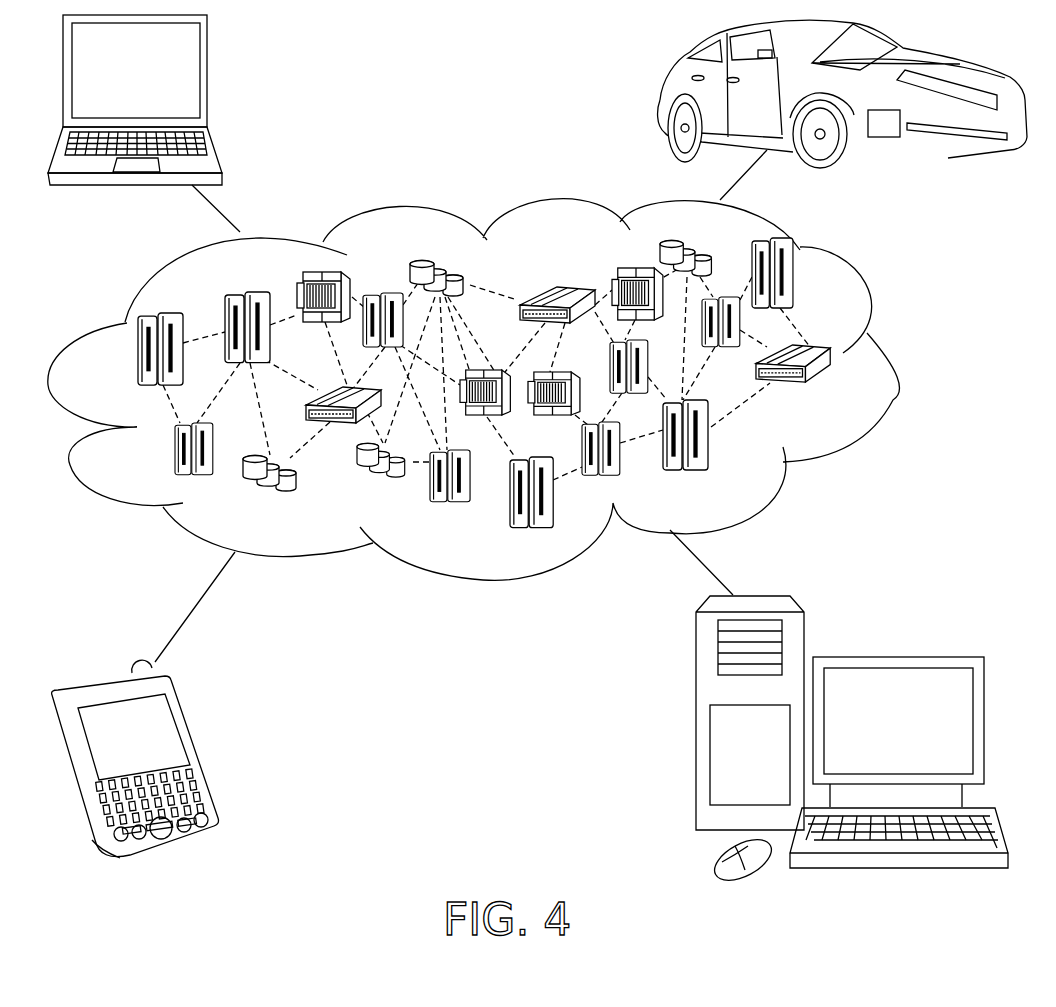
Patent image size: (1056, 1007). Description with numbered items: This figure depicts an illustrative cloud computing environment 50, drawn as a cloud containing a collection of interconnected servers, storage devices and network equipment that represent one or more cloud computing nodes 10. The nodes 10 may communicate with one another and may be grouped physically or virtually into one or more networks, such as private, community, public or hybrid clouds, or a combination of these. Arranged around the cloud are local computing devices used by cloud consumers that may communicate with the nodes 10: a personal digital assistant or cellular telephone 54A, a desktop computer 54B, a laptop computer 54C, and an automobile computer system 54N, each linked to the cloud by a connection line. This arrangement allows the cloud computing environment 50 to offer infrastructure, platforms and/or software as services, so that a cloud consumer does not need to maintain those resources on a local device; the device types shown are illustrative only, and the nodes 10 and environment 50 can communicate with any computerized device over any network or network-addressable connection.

The cloud computing nodes 10 is at (840, 394).
The cloud computing environment 50 is at (898, 362).
The personal digital assistant or cellular telephone 54A is at (200, 753).
The desktop computer 54B is at (897, 655).
The laptop computer 54C is at (210, 82).
The automobile computer system 54N is at (670, 97).